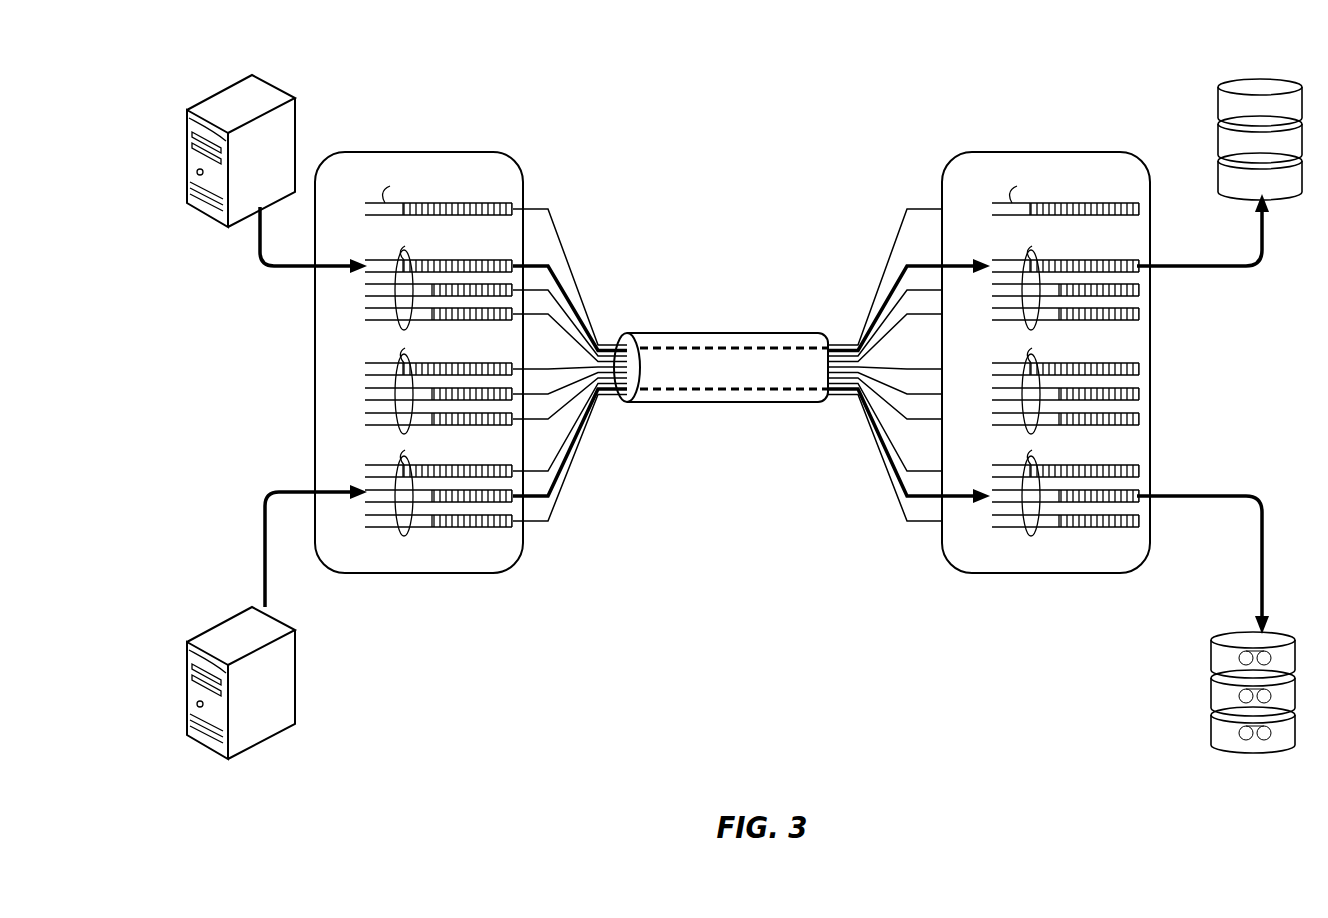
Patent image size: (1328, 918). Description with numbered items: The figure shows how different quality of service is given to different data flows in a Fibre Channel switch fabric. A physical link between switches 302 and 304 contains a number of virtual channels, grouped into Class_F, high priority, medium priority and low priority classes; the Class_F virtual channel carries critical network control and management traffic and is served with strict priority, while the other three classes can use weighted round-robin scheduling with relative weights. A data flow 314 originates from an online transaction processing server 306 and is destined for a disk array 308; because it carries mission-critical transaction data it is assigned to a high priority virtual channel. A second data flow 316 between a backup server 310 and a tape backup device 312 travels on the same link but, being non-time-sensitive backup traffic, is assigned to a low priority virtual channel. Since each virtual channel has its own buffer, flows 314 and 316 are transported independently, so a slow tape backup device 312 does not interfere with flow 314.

The switch 302 is at (419, 362).
The switch 304 is at (1046, 362).
The online transaction processing (OLTP) server 306 is at (268, 82).
The disk array 308 is at (1243, 83).
The backup server 310 is at (297, 694).
The tape backup device 312 is at (1227, 750).
The data flow 314 is at (277, 268).
The second data flow 316 is at (285, 492).